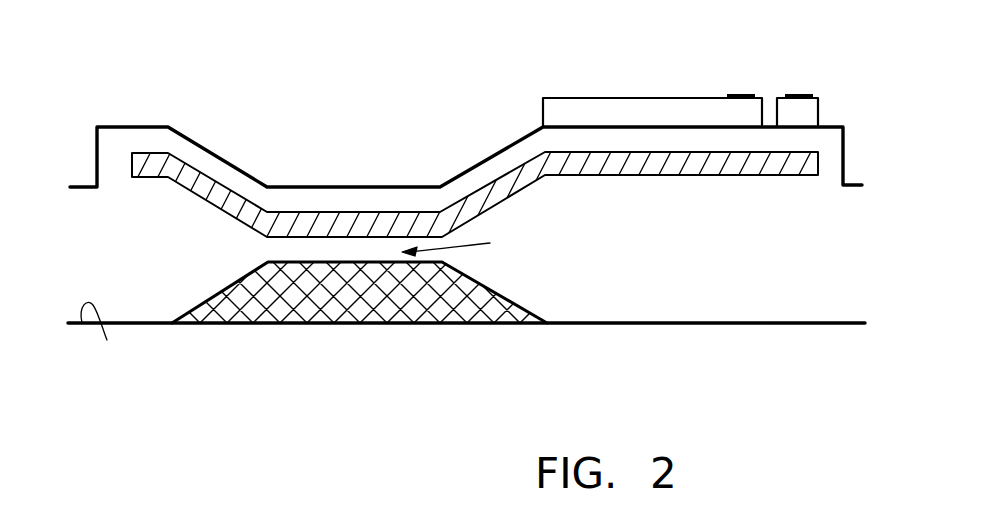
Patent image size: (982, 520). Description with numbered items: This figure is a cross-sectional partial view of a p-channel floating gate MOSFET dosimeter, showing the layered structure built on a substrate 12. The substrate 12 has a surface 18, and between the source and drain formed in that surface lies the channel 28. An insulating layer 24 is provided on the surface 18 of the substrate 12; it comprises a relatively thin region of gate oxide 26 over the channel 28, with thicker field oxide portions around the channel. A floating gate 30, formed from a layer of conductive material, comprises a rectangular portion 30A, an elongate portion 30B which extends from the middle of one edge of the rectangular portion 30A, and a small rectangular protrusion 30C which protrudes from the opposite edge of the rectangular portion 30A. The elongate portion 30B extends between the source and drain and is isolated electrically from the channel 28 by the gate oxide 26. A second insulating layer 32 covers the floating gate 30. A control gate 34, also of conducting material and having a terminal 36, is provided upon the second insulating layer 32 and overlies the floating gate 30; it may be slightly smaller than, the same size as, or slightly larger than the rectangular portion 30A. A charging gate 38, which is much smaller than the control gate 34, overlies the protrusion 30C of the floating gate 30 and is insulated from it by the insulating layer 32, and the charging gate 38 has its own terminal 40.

The substrate 12 is at (676, 377).
The surface 18 is at (103, 330).
The insulating layer 24 is at (676, 284).
The gate oxide 26 is at (462, 244).
The channel 28 is at (359, 304).
The floating gate 30 is at (468, 195).
The rectangular portion 30A is at (690, 175).
The elongate portion 30B is at (329, 223).
The rectangular protrusion 30C is at (793, 175).
The second insulating layer 32 is at (795, 141).
The control gate 34 is at (612, 112).
The terminal 36 is at (743, 96).
The charging gate 38 is at (820, 115).
The terminal 40 is at (800, 95).